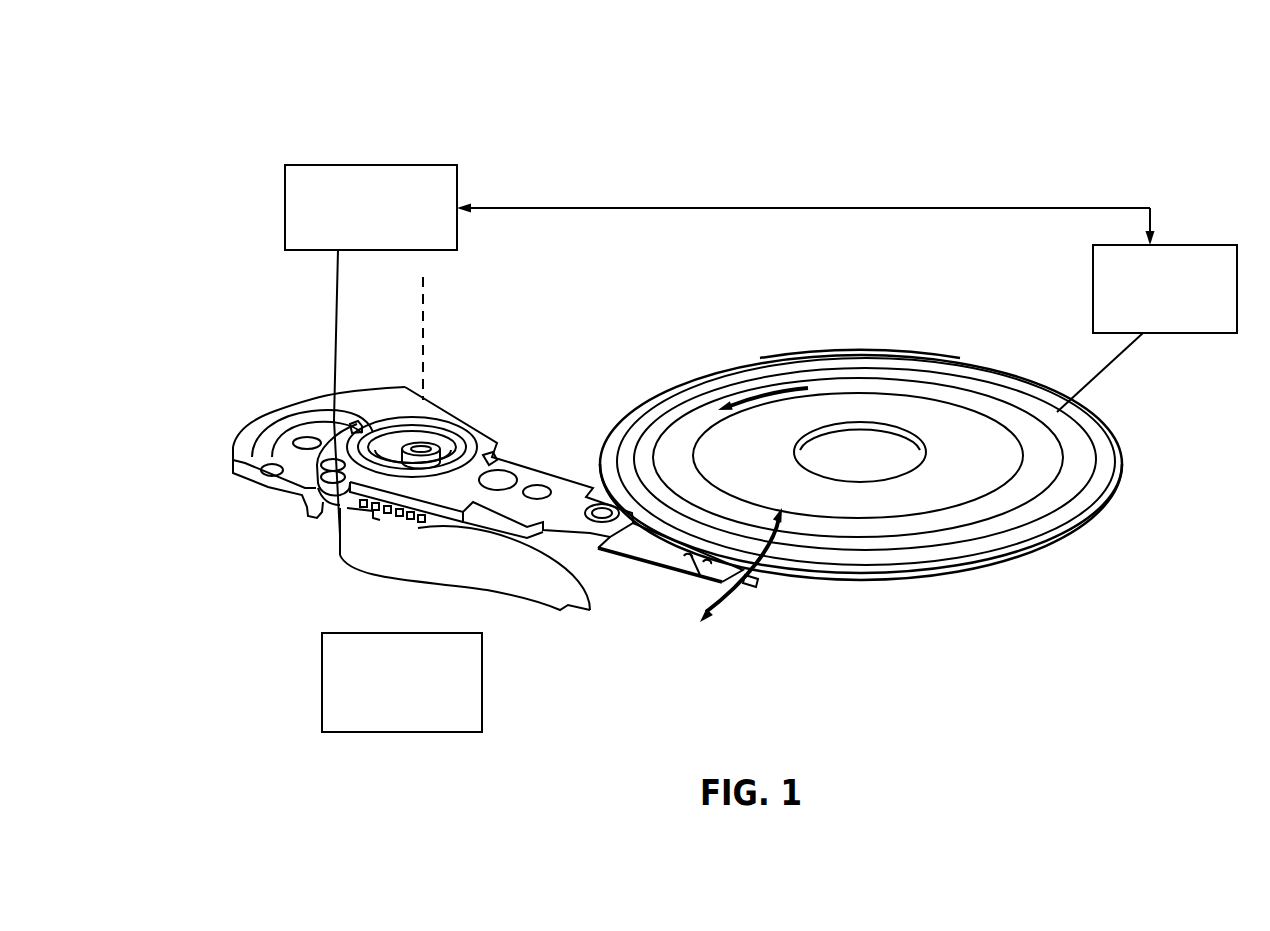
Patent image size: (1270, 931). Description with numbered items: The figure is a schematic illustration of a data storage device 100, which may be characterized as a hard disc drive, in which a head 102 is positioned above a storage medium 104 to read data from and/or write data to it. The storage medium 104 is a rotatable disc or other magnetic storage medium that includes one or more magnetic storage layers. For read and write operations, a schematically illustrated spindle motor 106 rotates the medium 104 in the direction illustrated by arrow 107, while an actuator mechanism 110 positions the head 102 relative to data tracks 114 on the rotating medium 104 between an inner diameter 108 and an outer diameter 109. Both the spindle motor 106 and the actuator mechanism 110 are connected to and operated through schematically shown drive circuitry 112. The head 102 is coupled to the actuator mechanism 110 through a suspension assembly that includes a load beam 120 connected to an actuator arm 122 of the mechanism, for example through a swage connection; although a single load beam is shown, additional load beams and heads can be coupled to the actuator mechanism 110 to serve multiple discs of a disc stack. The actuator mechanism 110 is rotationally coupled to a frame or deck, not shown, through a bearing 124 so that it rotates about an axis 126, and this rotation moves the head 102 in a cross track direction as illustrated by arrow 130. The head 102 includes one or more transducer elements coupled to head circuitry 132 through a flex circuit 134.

The data storage device 100 is at (1038, 148).
The head 102 is at (755, 580).
The storage medium 104 is at (894, 428).
The spindle motor 106 is at (1200, 244).
The arrow 107 is at (768, 390).
The inner diameter 108 is at (900, 427).
The outer diameter 109 is at (868, 353).
The actuator mechanism 110 is at (450, 385).
The drive circuitry 112 is at (458, 174).
The data tracks 114 is at (1007, 487).
The load beam 120 is at (639, 538).
The actuator arm 122 is at (550, 462).
The bearing 124 is at (420, 446).
The axis 126 is at (422, 357).
The arrow 130 is at (775, 547).
The head circuitry 132 is at (482, 681).
The flex circuit 134 is at (402, 633).